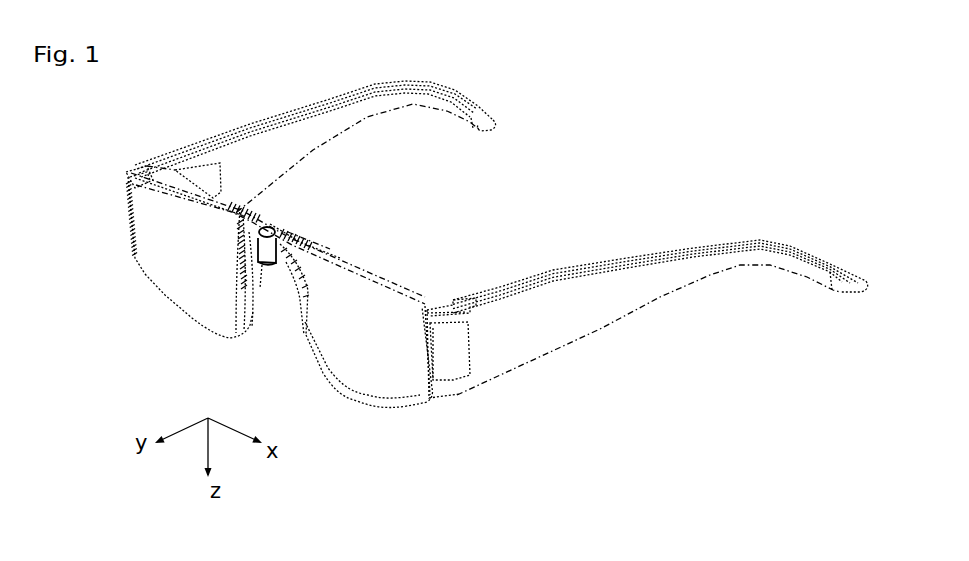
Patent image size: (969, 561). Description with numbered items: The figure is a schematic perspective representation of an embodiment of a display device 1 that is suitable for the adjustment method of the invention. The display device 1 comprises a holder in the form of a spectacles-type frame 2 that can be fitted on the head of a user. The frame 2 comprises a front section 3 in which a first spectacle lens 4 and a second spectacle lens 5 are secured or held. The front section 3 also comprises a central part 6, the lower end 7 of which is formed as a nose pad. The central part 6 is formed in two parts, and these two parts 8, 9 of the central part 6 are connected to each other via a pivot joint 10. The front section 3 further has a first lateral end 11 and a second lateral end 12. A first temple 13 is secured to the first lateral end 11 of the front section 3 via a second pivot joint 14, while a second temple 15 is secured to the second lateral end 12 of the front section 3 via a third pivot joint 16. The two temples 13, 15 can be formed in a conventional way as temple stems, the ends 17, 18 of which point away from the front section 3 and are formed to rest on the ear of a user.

The display device 1 is at (137, 266).
The spectacles-type frame 2 is at (201, 136).
The front section 3 is at (132, 208).
The first spectacle lens 4 is at (175, 295).
The second spectacle lens 5 is at (370, 377).
The central part 6 is at (318, 239).
The lower end 7 is at (257, 288).
The part of the central part 8 is at (250, 214).
The part of the central part 9 is at (290, 239).
The pivot joint 10 is at (273, 229).
The first lateral end 11 is at (132, 168).
The second lateral end 12 is at (428, 296).
The first temple 13 is at (280, 112).
The second pivot joint 14 is at (141, 165).
The second temple 15 is at (545, 278).
The third pivot joint 16 is at (447, 358).
The end of the first temple 17 is at (414, 106).
The end of the second temple 18 is at (766, 264).